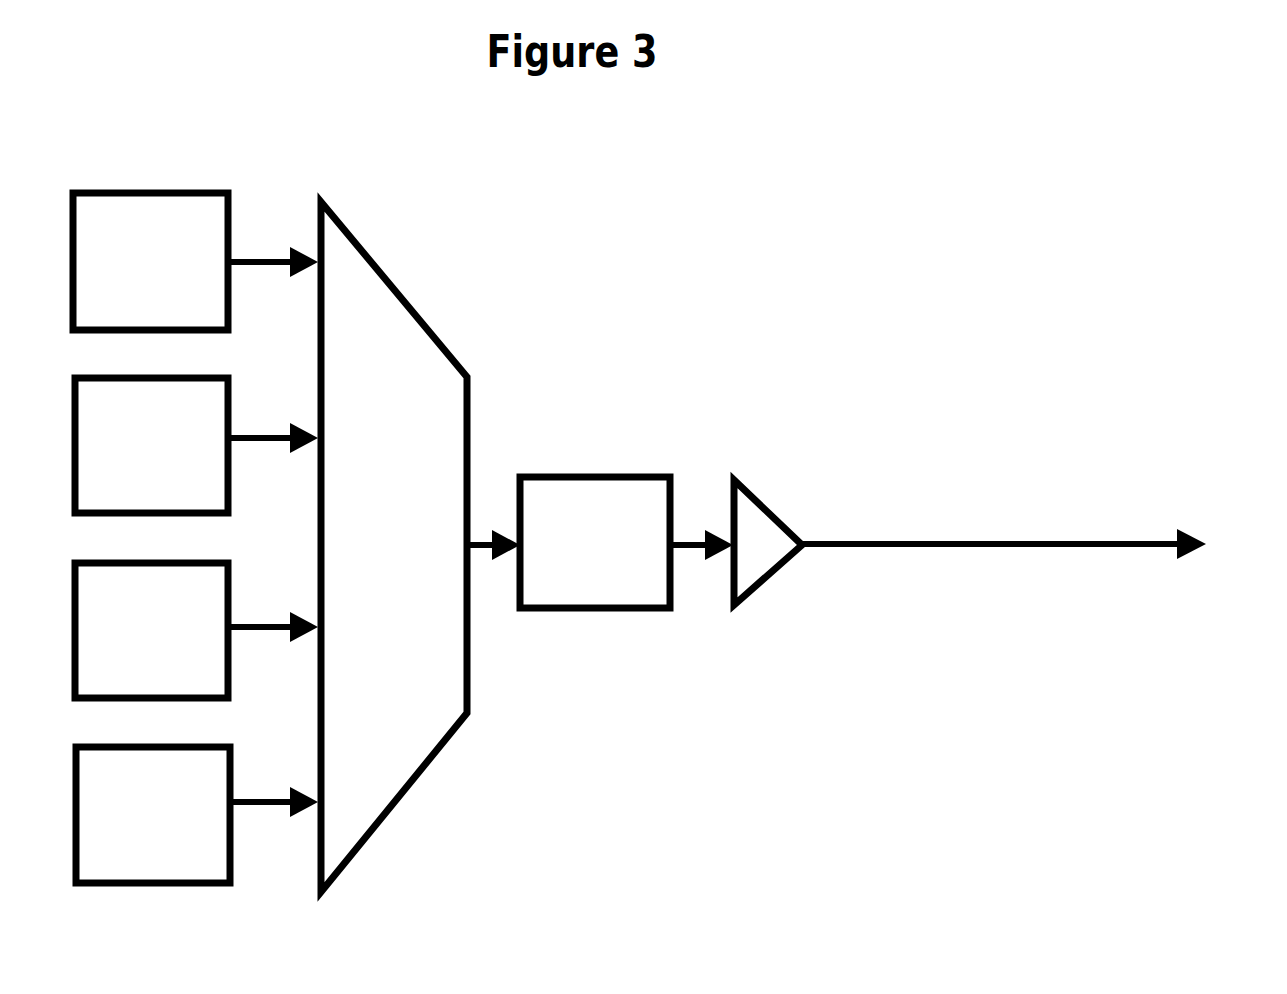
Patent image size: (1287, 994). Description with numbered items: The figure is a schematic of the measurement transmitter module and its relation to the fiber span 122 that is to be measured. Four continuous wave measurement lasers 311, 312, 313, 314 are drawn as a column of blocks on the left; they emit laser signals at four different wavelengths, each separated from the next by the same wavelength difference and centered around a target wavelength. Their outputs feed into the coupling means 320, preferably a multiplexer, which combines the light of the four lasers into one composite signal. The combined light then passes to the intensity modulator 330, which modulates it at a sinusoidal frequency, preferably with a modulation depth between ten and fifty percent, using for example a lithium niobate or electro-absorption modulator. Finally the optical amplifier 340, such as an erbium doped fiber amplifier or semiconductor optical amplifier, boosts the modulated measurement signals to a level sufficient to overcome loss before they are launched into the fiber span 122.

The measurement laser 311 is at (195, 261).
The measurement laser 312 is at (196, 445).
The measurement laser 313 is at (196, 630).
The measurement laser 314 is at (197, 815).
The coupling means 320 is at (420, 547).
The intensity modulator 330 is at (626, 542).
The optical amplifier 340 is at (769, 567).
The fiber span 122 is at (1004, 565).